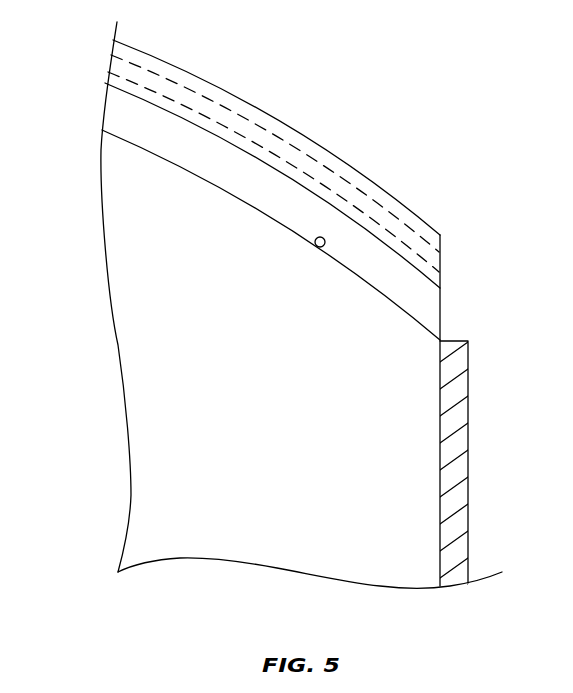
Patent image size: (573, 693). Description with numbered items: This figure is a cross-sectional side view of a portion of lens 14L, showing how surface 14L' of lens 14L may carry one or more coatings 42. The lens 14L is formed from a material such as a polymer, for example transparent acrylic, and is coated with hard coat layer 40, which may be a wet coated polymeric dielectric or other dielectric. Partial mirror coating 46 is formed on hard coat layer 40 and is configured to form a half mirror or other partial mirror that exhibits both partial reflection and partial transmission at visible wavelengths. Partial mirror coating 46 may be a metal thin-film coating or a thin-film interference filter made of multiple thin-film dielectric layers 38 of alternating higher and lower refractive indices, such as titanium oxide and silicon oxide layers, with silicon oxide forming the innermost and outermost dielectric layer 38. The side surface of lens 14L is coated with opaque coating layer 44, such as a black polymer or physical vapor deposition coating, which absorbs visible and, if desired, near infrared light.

The partial mirror coating 46 is at (98, 49).
The thin-film dielectric layer 38 is at (265, 131).
The hard coat layer 40 is at (112, 109).
The coating 42 is at (470, 235).
The surface 14L' is at (324, 274).
The opaque coating layer 44 is at (467, 458).
The lens 14L is at (310, 592).